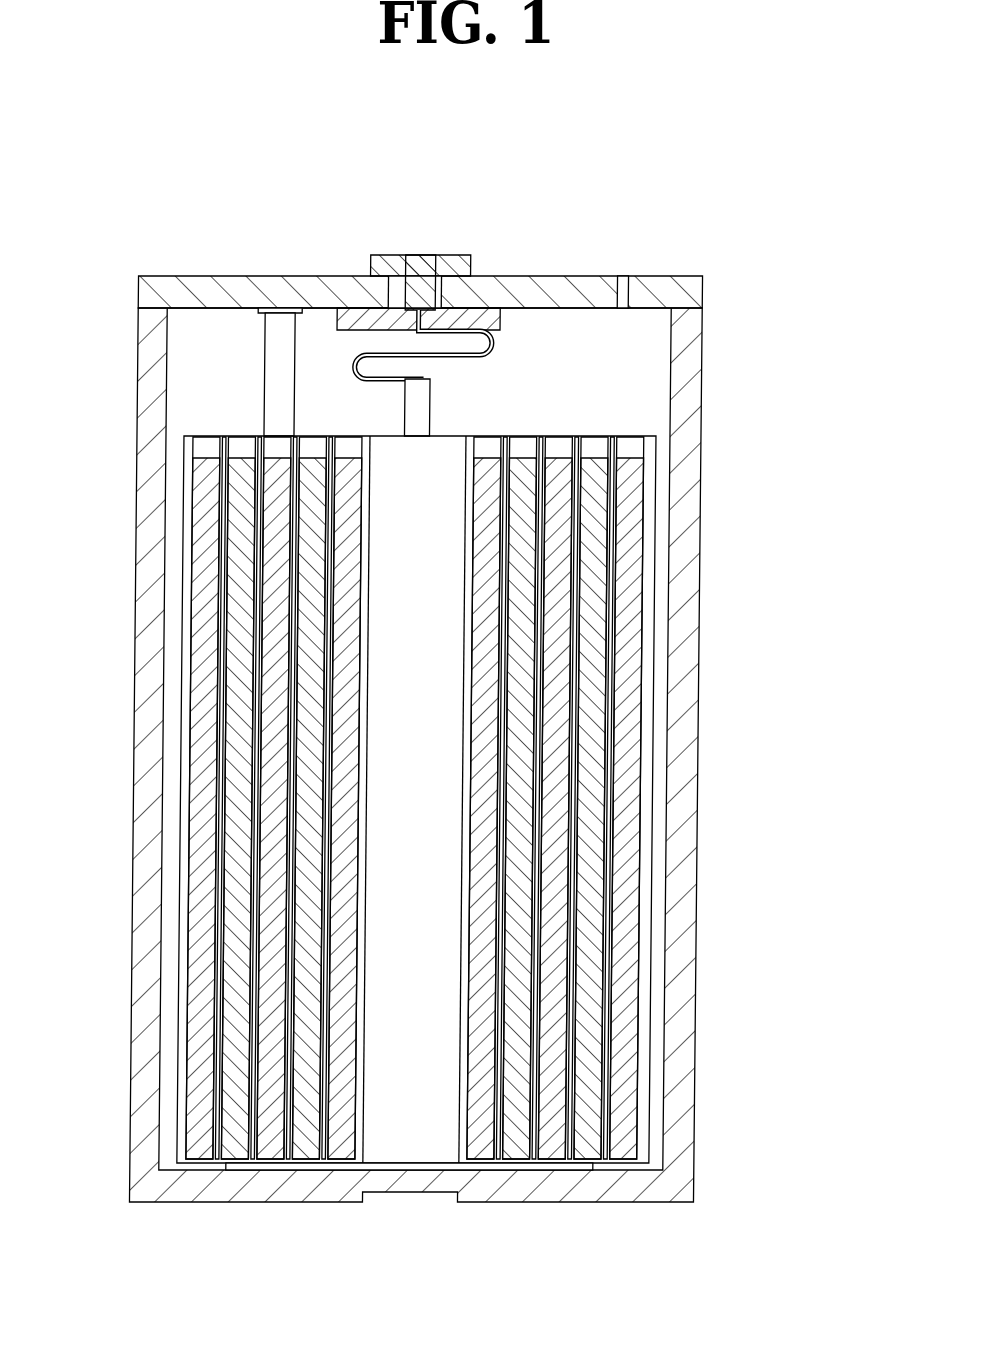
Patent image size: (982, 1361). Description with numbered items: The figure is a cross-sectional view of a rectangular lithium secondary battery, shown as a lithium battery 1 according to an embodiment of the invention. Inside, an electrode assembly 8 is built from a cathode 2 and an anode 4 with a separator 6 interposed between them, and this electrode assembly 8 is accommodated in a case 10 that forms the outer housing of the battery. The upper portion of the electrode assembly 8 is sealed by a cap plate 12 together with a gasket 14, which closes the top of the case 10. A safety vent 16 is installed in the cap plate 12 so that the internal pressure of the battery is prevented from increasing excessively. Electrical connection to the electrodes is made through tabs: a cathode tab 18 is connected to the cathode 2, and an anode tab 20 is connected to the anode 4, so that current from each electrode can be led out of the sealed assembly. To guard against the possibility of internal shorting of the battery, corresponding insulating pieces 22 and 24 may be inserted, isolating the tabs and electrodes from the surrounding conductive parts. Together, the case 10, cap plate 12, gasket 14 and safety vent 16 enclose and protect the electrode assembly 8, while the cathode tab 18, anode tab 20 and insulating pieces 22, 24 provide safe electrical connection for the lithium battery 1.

The lithium battery 1 is at (781, 428).
The cathode 2 is at (633, 1032).
The anode 4 is at (239, 975).
The separator 6 is at (221, 1100).
The electrode assembly 8 is at (584, 412).
The case 10 is at (134, 405).
The cap plate 12 is at (528, 283).
The gasket 14 is at (368, 259).
The safety vent 16 is at (615, 282).
The cathode tab 18 is at (274, 322).
The anode tab 20 is at (412, 258).
The insulating piece 22 is at (177, 705).
The insulating piece 24 is at (312, 1166).